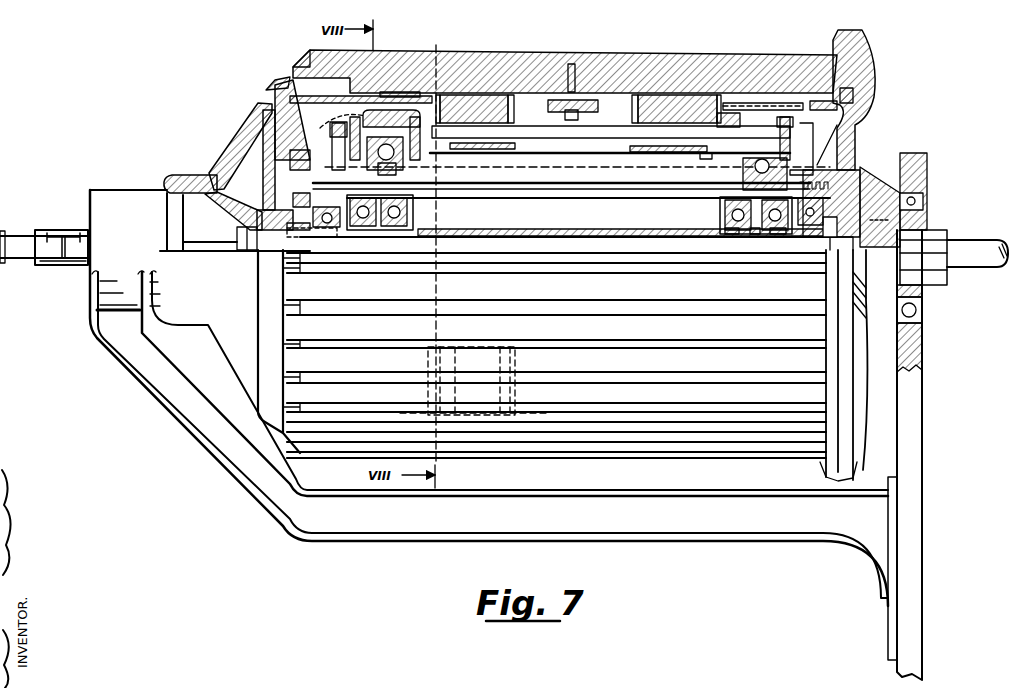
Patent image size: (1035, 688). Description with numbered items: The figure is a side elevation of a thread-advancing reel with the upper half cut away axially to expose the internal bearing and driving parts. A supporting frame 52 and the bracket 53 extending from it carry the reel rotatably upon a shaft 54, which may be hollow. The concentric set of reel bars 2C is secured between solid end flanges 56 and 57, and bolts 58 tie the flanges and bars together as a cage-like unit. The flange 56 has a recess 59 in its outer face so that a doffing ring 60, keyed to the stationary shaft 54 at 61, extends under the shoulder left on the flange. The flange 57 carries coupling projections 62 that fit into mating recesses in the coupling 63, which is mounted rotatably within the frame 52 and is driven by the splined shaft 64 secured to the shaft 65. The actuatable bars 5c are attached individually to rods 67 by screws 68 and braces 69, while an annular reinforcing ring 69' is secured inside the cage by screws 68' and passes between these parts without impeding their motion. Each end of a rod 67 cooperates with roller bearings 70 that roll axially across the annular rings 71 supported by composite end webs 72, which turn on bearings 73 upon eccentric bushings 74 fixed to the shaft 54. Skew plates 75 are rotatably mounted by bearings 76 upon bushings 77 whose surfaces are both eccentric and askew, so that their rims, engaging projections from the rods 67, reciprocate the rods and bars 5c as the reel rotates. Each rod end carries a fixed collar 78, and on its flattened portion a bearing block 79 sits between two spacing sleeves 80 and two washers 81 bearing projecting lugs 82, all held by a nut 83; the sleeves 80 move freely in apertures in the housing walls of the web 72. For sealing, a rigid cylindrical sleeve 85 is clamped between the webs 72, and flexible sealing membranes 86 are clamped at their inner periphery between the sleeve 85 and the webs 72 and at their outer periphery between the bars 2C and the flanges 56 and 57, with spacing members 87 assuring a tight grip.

The reel bars 2C is at (310, 50).
The actuatable bars 5c is at (484, 62).
The supporting frame 52 is at (915, 358).
The bracket 53 is at (164, 396).
The shaft 54 is at (598, 230).
The flange 56 is at (283, 130).
The flange 57 is at (873, 100).
The bolts 58 is at (548, 191).
The recess 59 is at (267, 150).
The doffing ring 60 is at (233, 147).
The key 61 is at (313, 236).
The coupling projections 62 is at (870, 182).
The coupling 63 is at (897, 172).
The splined shaft 64 is at (940, 240).
The shaft 65 is at (992, 247).
The rods 67 is at (560, 142).
The screws 68 is at (554, 74).
The screws 68' is at (587, 123).
The braces 69 is at (486, 66).
The annular reinforcing ring 69' is at (603, 75).
The roller bearings 70 is at (376, 148).
The annular rings 71 is at (385, 164).
The composite end webs 72 is at (415, 196).
The bearings 73 is at (722, 218).
The eccentric bushings 74 is at (728, 233).
The skew plates 75 is at (345, 140).
The bearings 76 is at (752, 234).
The bushings 77 is at (776, 234).
The collar 78 is at (472, 60).
The bearing block 79 is at (390, 110).
The spacing sleeves 80 is at (355, 117).
The washers 81 is at (340, 95).
The projecting lugs 82 is at (330, 120).
The nut 83 is at (330, 148).
The cylindrical sleeve 85 is at (500, 172).
The sealing membranes 86 is at (395, 95).
The spacing members 87 is at (275, 86).